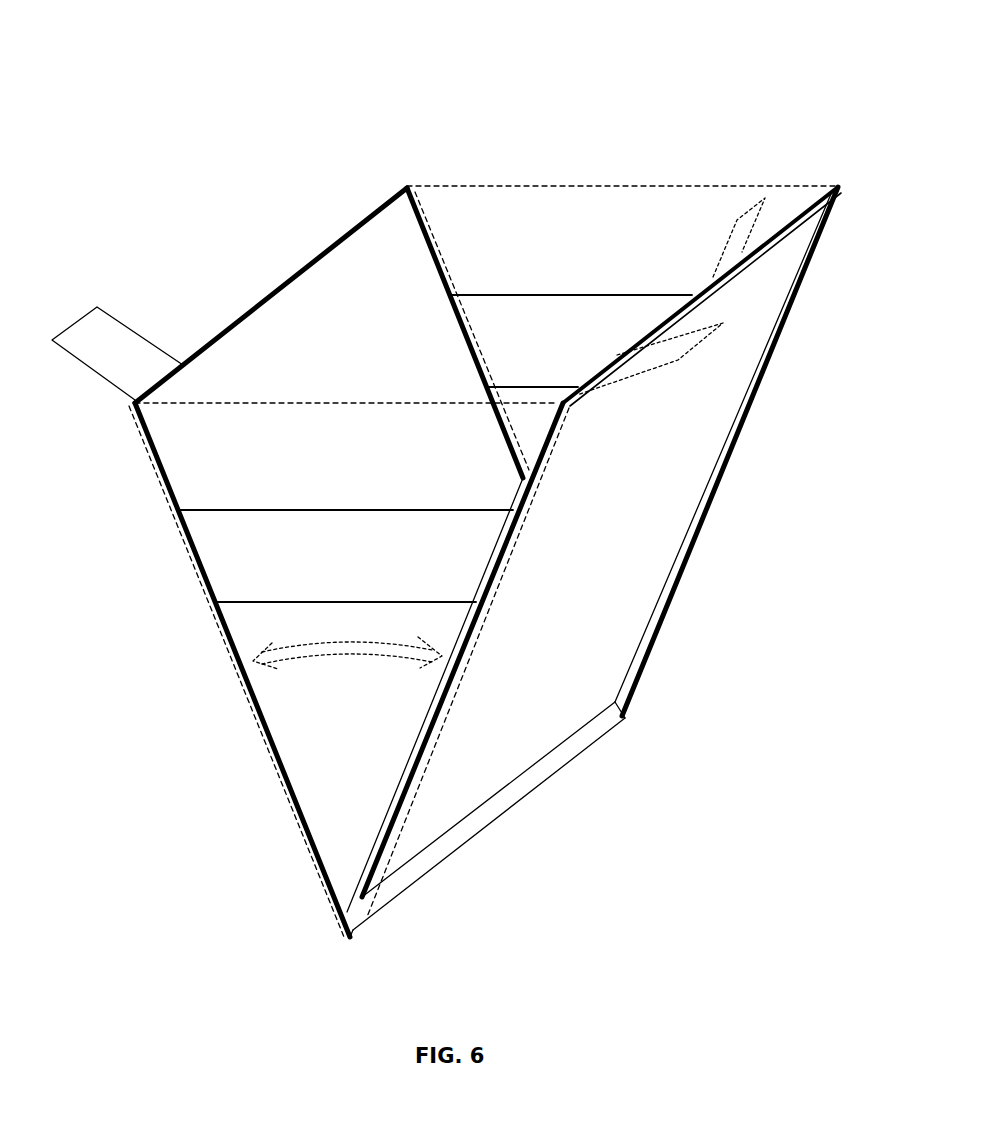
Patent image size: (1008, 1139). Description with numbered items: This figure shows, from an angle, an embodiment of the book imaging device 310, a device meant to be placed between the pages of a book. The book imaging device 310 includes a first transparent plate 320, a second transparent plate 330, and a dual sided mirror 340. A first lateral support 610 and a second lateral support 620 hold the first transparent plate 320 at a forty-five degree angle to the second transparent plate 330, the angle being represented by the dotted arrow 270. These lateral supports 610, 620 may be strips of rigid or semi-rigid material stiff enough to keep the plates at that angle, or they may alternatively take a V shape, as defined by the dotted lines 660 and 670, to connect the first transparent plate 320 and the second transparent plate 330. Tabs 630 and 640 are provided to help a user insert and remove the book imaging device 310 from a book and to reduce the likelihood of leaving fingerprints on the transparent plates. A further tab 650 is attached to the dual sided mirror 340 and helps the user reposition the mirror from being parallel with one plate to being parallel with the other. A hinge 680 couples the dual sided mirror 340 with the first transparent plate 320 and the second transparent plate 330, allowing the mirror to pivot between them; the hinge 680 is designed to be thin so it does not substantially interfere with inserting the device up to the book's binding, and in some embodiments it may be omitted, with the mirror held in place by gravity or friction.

The book imaging device 310 is at (771, 86).
The first transparent plate 320 is at (409, 186).
The second transparent plate 330 is at (776, 360).
The dual sided mirror 340 is at (832, 184).
The dotted arrow 270 is at (394, 658).
The first lateral support 610 is at (286, 509).
The second lateral support 620 is at (589, 293).
The tab 630 is at (100, 306).
The tab 640 is at (655, 375).
The tab 650 is at (741, 215).
The dotted line 660 is at (349, 401).
The dotted line 670 is at (578, 185).
The hinge 680 is at (552, 774).